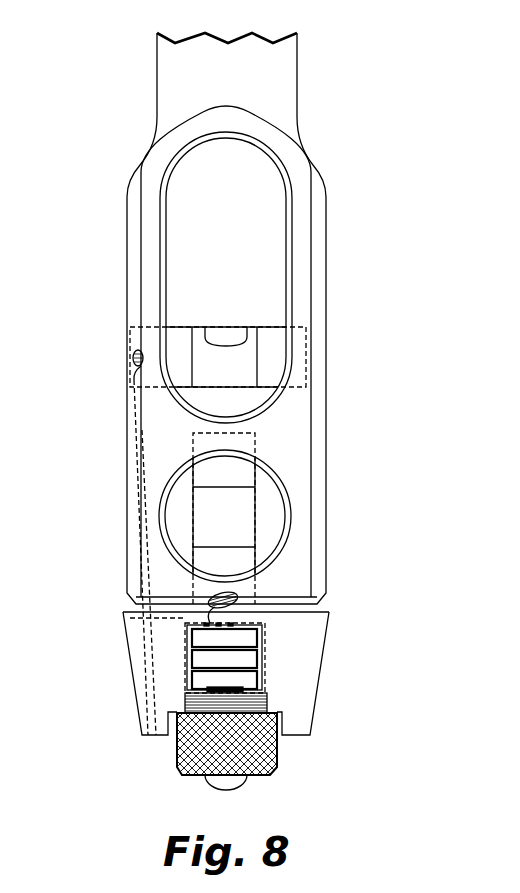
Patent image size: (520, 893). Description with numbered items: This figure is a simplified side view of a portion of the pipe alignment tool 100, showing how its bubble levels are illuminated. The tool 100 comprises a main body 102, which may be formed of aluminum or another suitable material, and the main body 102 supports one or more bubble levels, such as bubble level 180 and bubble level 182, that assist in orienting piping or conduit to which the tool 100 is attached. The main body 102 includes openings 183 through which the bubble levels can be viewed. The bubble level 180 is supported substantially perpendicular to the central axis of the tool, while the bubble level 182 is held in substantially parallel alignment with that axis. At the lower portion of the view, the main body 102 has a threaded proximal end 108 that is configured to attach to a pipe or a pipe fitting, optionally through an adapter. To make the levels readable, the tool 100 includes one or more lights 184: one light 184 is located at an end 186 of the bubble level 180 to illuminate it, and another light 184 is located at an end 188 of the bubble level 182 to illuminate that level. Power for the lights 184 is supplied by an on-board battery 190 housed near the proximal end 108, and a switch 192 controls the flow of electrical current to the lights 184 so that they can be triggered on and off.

The pipe alignment tool 100 is at (424, 146).
The main body 102 is at (325, 223).
The proximal end 108 is at (308, 660).
The bubble level 180 is at (268, 353).
The bubble level 182 is at (238, 527).
The openings 183 is at (178, 228).
The lights 184 is at (133, 360).
The end of the bubble level 186 is at (180, 338).
The end of the bubble level 188 is at (237, 560).
The on-board battery 190 is at (200, 658).
The switch 192 is at (237, 780).